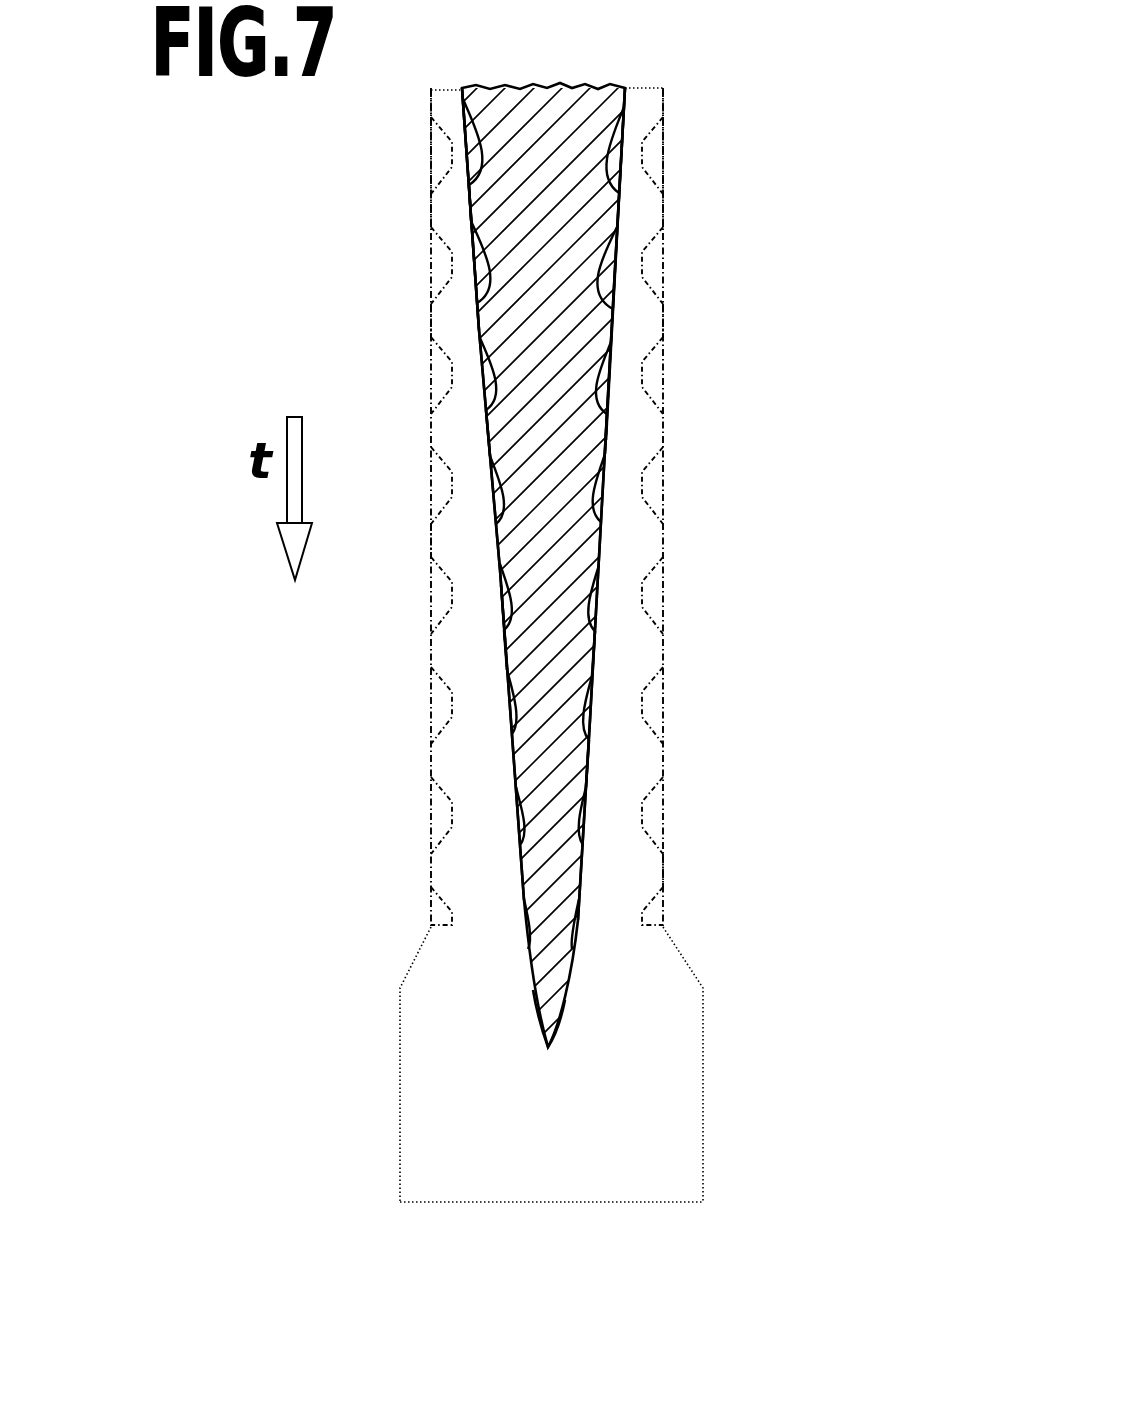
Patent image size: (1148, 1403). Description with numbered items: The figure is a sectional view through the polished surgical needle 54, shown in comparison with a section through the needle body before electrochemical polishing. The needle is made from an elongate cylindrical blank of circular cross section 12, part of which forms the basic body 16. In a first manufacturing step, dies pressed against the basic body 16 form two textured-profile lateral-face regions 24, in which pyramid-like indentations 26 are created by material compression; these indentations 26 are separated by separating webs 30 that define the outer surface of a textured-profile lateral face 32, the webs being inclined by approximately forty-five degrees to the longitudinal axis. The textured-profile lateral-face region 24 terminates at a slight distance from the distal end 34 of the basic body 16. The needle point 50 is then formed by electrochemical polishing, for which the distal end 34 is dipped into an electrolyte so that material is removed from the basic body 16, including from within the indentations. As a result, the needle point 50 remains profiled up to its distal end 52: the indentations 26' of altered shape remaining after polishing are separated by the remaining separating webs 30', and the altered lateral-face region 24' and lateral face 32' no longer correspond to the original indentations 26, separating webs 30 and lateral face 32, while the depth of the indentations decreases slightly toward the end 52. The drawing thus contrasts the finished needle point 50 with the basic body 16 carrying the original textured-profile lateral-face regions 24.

The circular cross section 12 is at (531, 1203).
The basic body 16 is at (548, 108).
The textured-profile lateral-face region 24 is at (548, 507).
The textured-profile lateral-face region after polishing 24' is at (555, 504).
The pyramid-like indentations 26 is at (538, 521).
The altered indentations 26' is at (544, 524).
The separating webs 30 is at (554, 613).
The remaining separating webs 30' is at (551, 486).
The textured-profile lateral face 32 is at (542, 158).
The textured-profile lateral face after polishing 32' is at (544, 281).
The distal end 34 is at (703, 1127).
The needle point 50 is at (483, 622).
The distal end of needle point 52 is at (548, 1050).
The surgical needle 54 is at (716, 82).